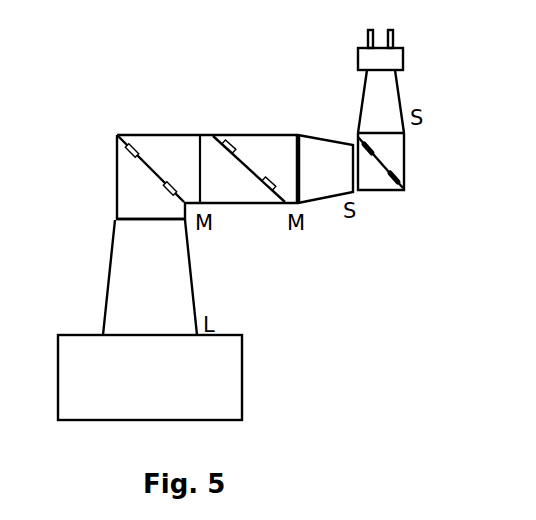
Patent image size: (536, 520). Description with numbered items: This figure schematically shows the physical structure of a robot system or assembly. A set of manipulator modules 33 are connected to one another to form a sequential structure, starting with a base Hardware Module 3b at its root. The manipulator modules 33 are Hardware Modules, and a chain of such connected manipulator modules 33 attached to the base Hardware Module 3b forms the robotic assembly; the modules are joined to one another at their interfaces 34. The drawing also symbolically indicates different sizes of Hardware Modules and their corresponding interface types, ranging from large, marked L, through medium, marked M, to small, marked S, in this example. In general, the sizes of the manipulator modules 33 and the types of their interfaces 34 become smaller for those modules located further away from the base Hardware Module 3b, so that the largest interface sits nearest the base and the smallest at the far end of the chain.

The base Hardware Module 3b is at (228, 372).
The manipulator module 33 is at (153, 137).
The interface surface 34 is at (200, 136).